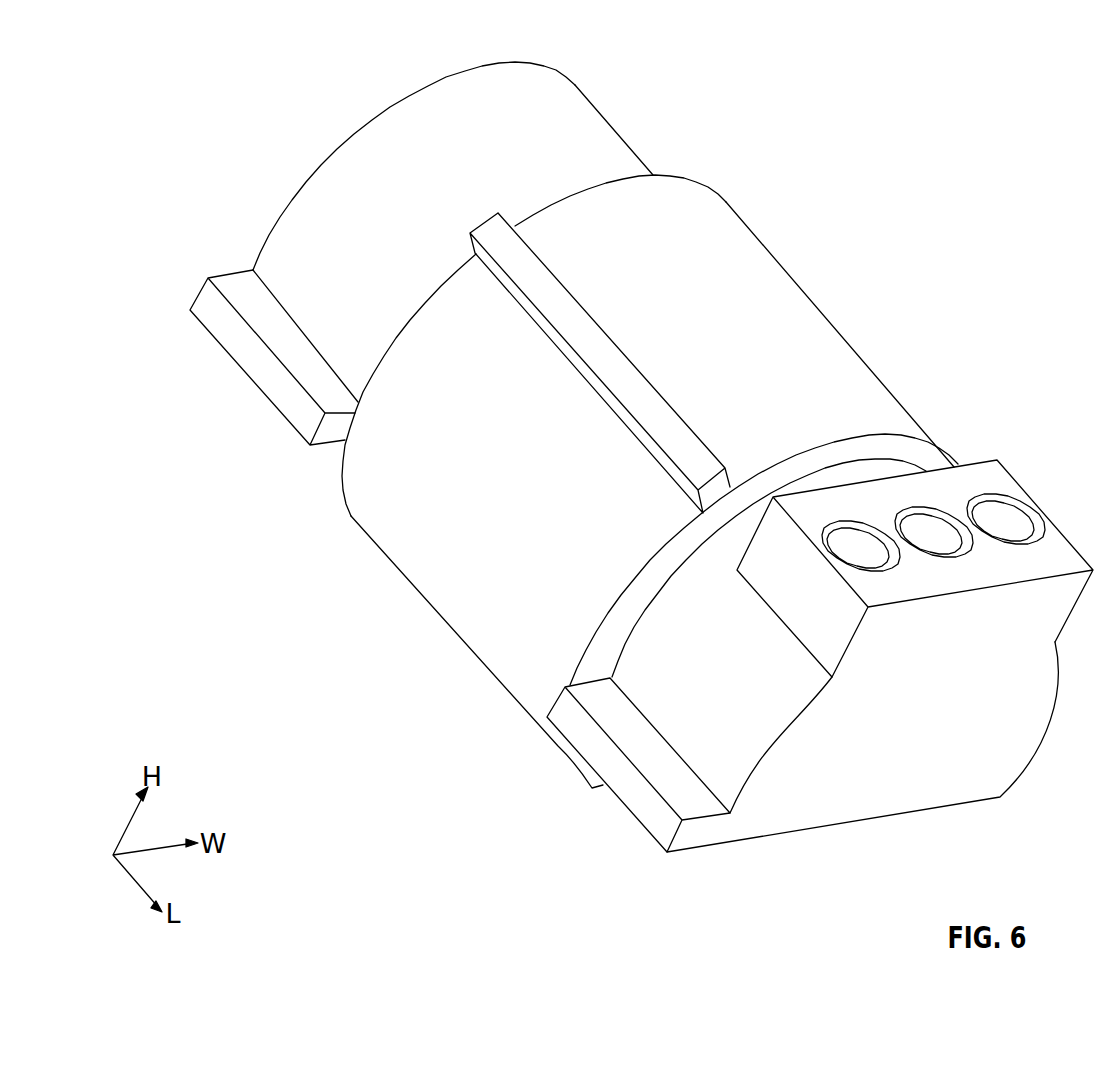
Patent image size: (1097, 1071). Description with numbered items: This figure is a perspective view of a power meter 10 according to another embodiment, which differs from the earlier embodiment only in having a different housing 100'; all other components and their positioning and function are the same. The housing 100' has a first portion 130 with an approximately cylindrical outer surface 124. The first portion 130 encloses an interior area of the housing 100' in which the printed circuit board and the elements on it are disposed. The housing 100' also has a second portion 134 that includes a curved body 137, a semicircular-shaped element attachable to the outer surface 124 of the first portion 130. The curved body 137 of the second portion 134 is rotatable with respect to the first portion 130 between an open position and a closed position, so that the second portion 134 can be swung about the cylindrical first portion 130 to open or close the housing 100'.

The power meter 10 is at (210, 70).
The housing 100' is at (251, 357).
The outer surface 124 is at (560, 122).
The first portion 130 is at (345, 188).
The second portion 134 is at (775, 317).
The curved body 137 is at (680, 210).